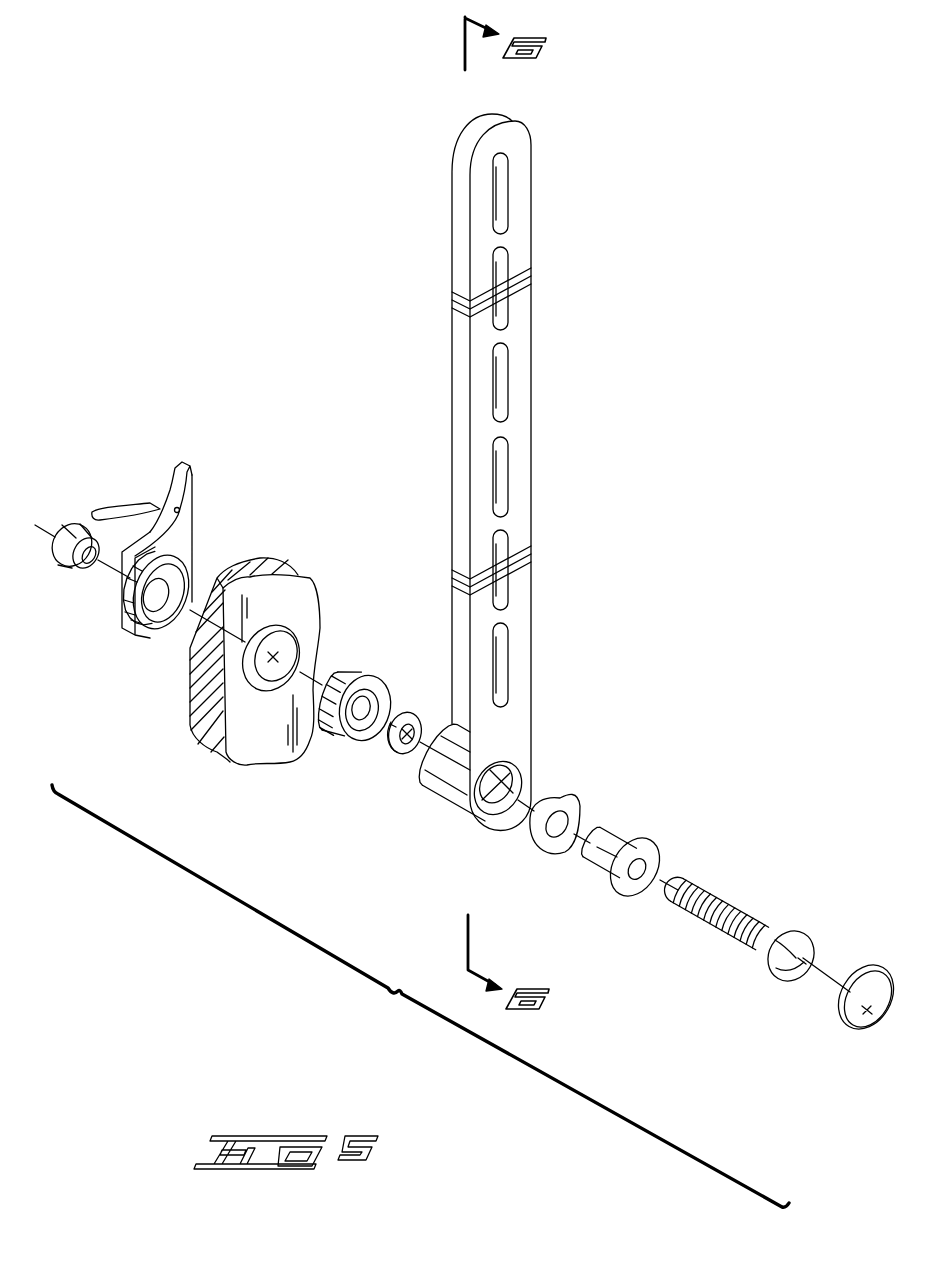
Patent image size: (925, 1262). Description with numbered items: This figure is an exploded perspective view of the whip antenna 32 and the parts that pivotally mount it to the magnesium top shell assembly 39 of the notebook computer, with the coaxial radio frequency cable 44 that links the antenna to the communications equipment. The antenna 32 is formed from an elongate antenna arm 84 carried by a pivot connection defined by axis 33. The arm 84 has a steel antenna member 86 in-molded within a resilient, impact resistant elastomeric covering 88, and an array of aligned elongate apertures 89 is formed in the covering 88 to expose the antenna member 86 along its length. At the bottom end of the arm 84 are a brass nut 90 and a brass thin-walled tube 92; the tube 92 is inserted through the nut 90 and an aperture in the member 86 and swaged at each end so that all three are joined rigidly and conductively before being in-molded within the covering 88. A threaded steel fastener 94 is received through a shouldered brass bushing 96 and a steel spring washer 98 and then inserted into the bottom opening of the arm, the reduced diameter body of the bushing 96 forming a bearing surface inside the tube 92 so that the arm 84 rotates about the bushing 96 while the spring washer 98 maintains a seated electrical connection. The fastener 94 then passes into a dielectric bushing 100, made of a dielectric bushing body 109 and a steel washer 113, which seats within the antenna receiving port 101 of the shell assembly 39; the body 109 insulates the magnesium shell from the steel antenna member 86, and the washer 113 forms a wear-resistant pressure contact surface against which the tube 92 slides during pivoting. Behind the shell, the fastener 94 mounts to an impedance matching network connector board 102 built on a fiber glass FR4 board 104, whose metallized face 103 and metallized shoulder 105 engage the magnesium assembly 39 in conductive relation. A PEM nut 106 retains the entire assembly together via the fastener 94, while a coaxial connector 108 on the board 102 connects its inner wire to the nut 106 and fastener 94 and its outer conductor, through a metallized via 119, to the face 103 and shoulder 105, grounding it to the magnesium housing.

The whip antenna 32 is at (420, 996).
The axis 33 is at (827, 983).
The magnesium top shell assembly 39 is at (246, 748).
The coaxial radio frequency cable 44 is at (120, 508).
The antenna arm 84 is at (556, 384).
The steel antenna member 86 is at (505, 495).
The elastomeric covering 88 is at (522, 615).
The elongate apertures 89 is at (505, 310).
The brass nut 90 is at (482, 838).
The brass thin-walled tube 92 is at (517, 785).
The threaded steel fastener 94 is at (806, 947).
The shouldered brass bushing 96 is at (620, 836).
The steel spring washer 98 is at (533, 822).
The dielectric bushing 100 is at (397, 783).
The antenna receiving port 101 is at (274, 656).
The impedance matching network connector board 102 is at (138, 636).
The metallized face 103 is at (182, 545).
The fiber glass FR4 board 104 is at (876, 1030).
The metallized shoulder 105 is at (196, 572).
The PEM nut 106 is at (65, 523).
The coaxial connector 108 is at (142, 483).
The dielectric bushing body 109 is at (364, 680).
The steel washer 113 is at (410, 714).
The metallized via 119 is at (190, 500).